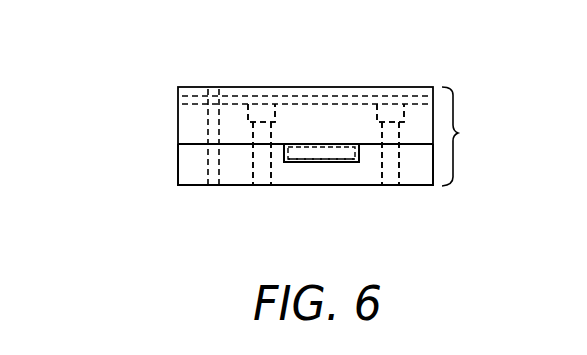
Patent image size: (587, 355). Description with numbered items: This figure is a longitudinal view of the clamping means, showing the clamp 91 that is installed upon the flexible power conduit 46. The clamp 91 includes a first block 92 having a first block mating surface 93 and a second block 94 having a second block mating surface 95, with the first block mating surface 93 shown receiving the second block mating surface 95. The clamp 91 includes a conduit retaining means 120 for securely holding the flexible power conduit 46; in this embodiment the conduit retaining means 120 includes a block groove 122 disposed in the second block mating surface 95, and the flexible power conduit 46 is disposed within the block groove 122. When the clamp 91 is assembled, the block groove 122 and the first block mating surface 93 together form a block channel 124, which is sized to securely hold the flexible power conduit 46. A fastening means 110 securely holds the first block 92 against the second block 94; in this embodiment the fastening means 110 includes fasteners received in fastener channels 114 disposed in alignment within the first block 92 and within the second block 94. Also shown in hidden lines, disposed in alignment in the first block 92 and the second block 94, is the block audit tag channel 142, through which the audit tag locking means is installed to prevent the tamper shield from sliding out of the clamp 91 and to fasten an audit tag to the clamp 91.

The clamp 91 is at (458, 133).
The first block 92 is at (172, 120).
The first block mating surface 93 is at (188, 144).
The second block mating surface 95 is at (188, 144).
The second block 94 is at (172, 172).
The block audit tag channel 142 is at (210, 115).
The fastener channels 114 is at (271, 141).
The fastening means 110 is at (389, 116).
The block groove 122 is at (298, 168).
The block channel 124 is at (268, 208).
The conduit retaining means 120 is at (290, 207).
The flexible power conduit 46 is at (342, 163).